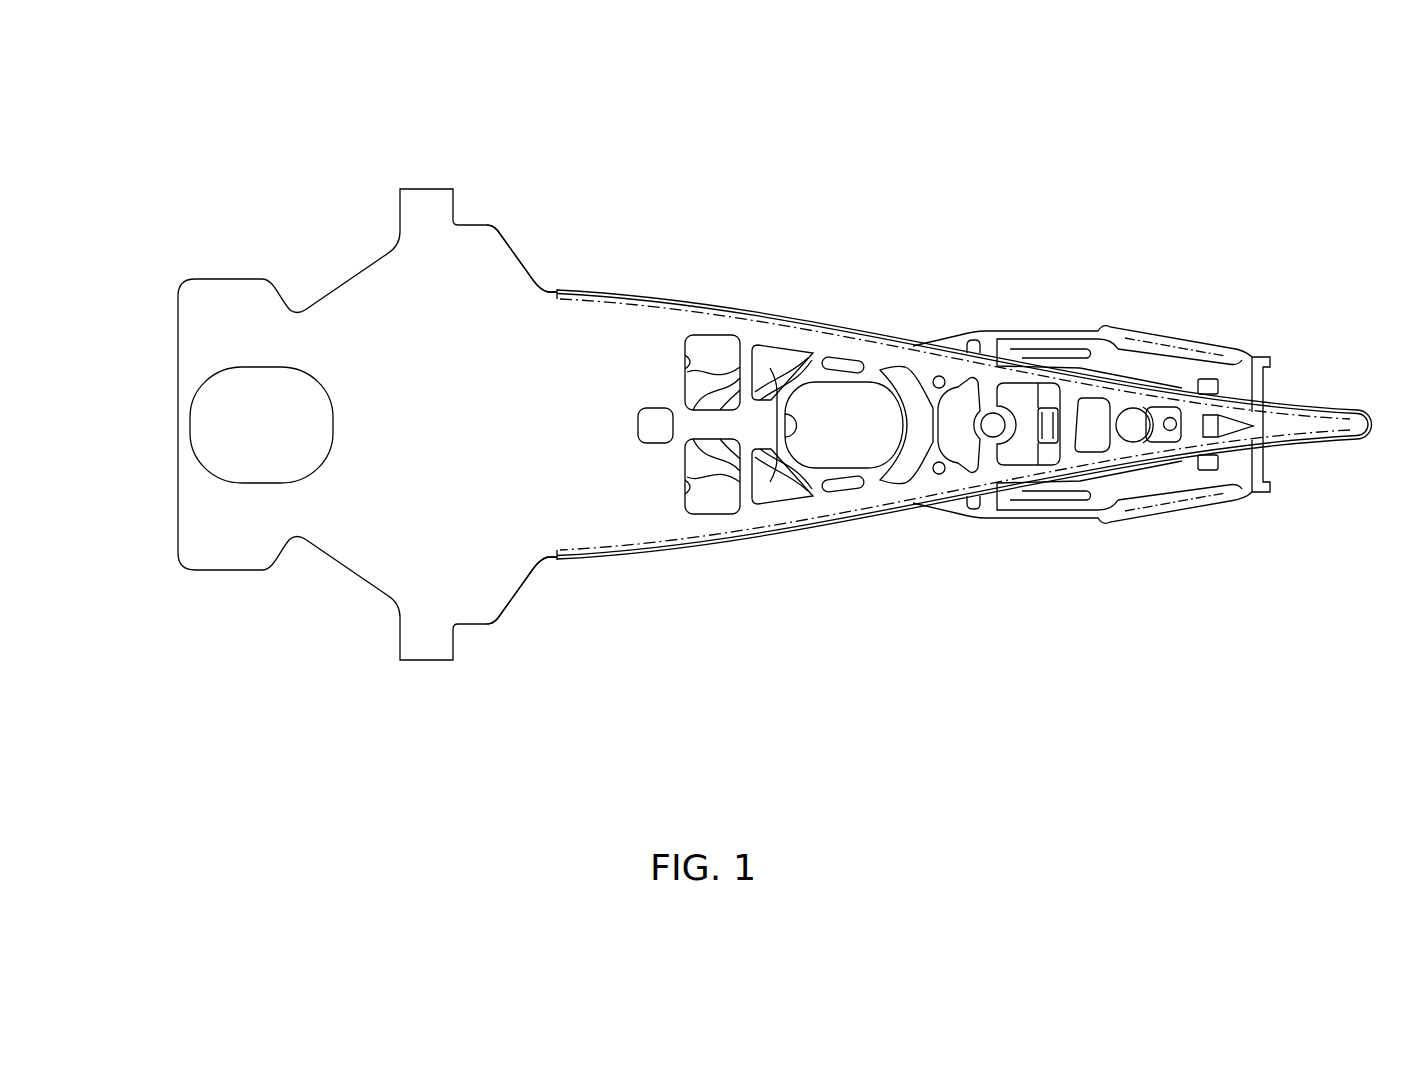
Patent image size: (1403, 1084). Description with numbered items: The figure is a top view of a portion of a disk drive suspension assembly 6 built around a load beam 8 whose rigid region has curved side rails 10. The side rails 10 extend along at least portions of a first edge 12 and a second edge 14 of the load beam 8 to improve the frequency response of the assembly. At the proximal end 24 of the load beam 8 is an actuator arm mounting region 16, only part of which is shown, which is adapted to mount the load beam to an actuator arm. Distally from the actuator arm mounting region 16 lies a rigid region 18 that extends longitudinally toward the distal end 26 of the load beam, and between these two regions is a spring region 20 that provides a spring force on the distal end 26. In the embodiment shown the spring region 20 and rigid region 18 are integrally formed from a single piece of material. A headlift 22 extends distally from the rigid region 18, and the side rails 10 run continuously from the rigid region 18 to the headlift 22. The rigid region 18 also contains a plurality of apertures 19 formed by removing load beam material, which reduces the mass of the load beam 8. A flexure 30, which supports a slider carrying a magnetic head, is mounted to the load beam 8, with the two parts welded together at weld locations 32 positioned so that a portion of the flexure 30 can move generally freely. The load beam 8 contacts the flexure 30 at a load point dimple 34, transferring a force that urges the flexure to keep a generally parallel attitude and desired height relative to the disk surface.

The disk drive suspension assembly 6 is at (744, 445).
The load beam 8 is at (587, 313).
The side rails 10 is at (745, 315).
The first edge 12 is at (800, 323).
The second edge 14 is at (833, 518).
The actuator arm mounting region 16 is at (247, 571).
The rigid region 18 is at (960, 383).
The apertures 19 is at (713, 353).
The spring region 20 is at (538, 273).
The headlift 22 is at (1335, 408).
The proximal end 24 is at (162, 568).
The distal end 26 is at (1376, 447).
The flexure 30 is at (1080, 520).
The weld locations 32 is at (939, 376).
The load point dimple 34 is at (1137, 440).